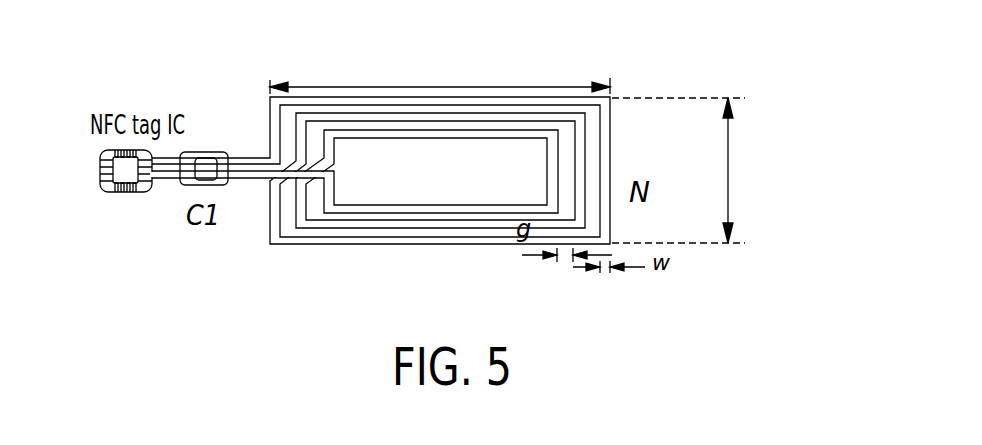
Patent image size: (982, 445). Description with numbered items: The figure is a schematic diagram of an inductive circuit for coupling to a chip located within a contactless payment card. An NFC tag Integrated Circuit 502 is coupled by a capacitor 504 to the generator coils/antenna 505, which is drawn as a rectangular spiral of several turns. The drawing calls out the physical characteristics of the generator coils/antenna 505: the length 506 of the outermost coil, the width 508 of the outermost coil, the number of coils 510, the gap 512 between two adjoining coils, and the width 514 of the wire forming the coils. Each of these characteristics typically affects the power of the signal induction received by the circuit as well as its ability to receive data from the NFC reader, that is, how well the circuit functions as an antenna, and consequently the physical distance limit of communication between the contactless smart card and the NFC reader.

The NFC tag integrated circuit 502 is at (98, 172).
The capacitor 504 is at (185, 213).
The generator coils/antenna 505 is at (636, 73).
The length of outermost coil 506 is at (465, 85).
The width of outermost coil 508 is at (730, 180).
The number of coils 510 is at (626, 173).
The gap between two adjoining coils 512 is at (565, 272).
The width of wire forming the coils 514 is at (607, 283).